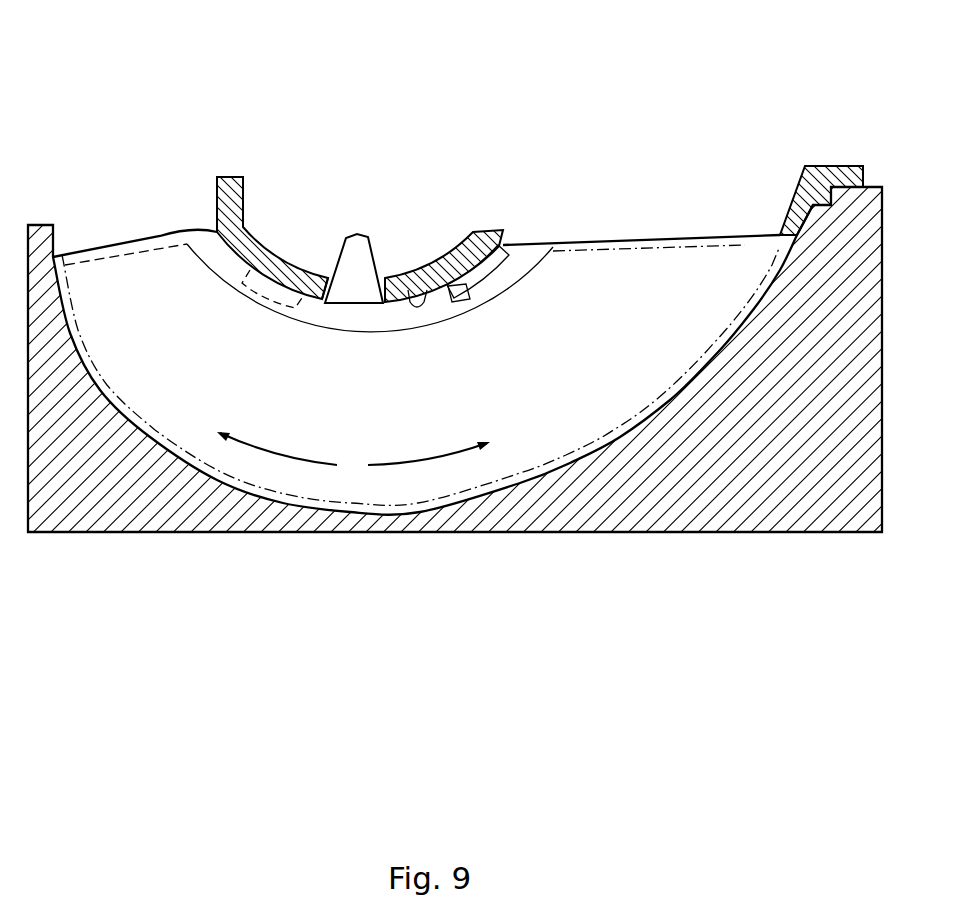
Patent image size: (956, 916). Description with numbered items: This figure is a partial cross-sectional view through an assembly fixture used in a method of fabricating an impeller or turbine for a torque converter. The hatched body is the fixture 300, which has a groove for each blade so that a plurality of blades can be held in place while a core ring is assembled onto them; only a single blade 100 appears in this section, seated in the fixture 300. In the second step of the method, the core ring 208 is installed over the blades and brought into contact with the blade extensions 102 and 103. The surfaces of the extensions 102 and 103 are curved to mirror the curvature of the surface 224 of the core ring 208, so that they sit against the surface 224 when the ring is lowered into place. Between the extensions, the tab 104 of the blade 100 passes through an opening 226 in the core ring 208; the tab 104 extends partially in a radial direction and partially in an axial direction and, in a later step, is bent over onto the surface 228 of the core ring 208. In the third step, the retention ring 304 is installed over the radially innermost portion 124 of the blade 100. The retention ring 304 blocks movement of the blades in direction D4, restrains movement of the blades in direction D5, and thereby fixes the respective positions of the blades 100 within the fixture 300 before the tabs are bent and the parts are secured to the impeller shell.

The blade 100 is at (637, 236).
The extension 102 is at (476, 254).
The extension 103 is at (266, 278).
The tab 104 is at (360, 238).
The radially innermost portion 124 is at (781, 238).
The core ring 208 is at (230, 177).
The surface 224 is at (418, 292).
The opening 226 is at (326, 279).
The surface 228 is at (386, 279).
The fixture 300 is at (39, 218).
The retention ring 304 is at (832, 166).
The direction D4 is at (437, 458).
The direction D5 is at (297, 458).